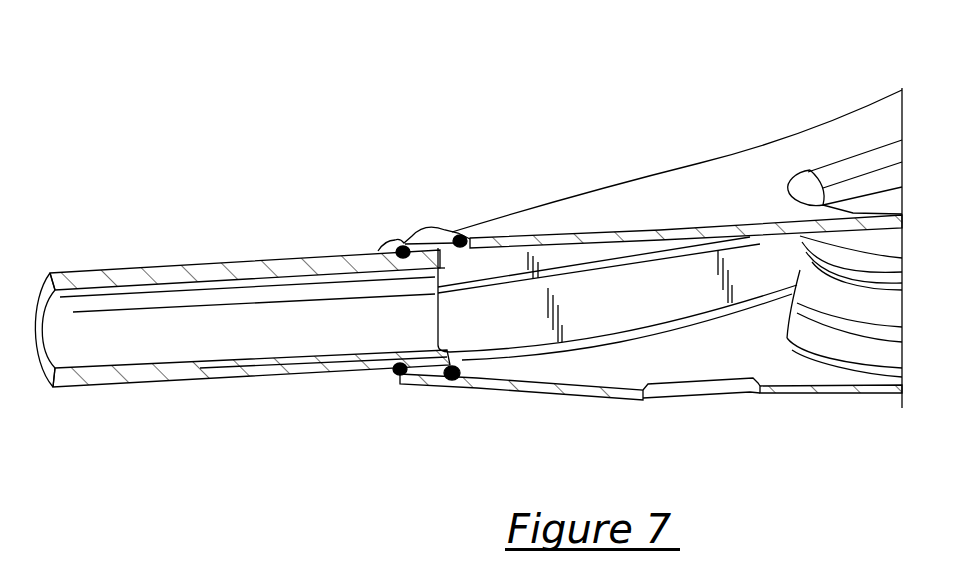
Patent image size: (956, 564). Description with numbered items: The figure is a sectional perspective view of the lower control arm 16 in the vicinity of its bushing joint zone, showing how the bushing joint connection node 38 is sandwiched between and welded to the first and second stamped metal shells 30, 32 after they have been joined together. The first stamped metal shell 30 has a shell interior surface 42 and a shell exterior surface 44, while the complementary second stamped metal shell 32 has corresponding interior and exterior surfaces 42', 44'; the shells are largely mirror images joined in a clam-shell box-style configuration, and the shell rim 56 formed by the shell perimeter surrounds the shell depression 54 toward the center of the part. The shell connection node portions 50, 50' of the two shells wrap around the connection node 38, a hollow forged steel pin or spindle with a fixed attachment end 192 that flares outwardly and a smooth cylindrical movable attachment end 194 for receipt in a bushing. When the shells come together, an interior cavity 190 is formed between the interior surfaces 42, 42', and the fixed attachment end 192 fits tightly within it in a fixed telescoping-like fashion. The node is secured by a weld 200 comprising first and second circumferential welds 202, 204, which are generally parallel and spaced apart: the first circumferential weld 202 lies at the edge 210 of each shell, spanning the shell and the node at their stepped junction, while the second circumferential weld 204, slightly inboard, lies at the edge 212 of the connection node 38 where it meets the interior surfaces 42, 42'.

The lower control arm 16 is at (448, 130).
The first stamped metal shell 30 is at (630, 207).
The second stamped metal shell 32 is at (610, 383).
The connection node 38 is at (165, 245).
The shell interior surface 42 is at (599, 249).
The shell interior surface 42' is at (521, 420).
The shell exterior surface 44 is at (686, 179).
The shell exterior surface 44' is at (772, 419).
The shell connection node portion 50 is at (630, 179).
The shell connection node portion 50' is at (448, 479).
The shell depression 54 is at (870, 207).
The shell rim 56 is at (830, 145).
The interior cavity 190 is at (472, 333).
The fixed attachment end 192 is at (373, 360).
The movable attachment end 194 is at (77, 380).
The weld 200 is at (407, 207).
The first circumferential weld 202 is at (387, 250).
The second circumferential weld 204 is at (438, 230).
The edge of metal shell 210 is at (403, 247).
The edge of connection node 212 is at (460, 265).